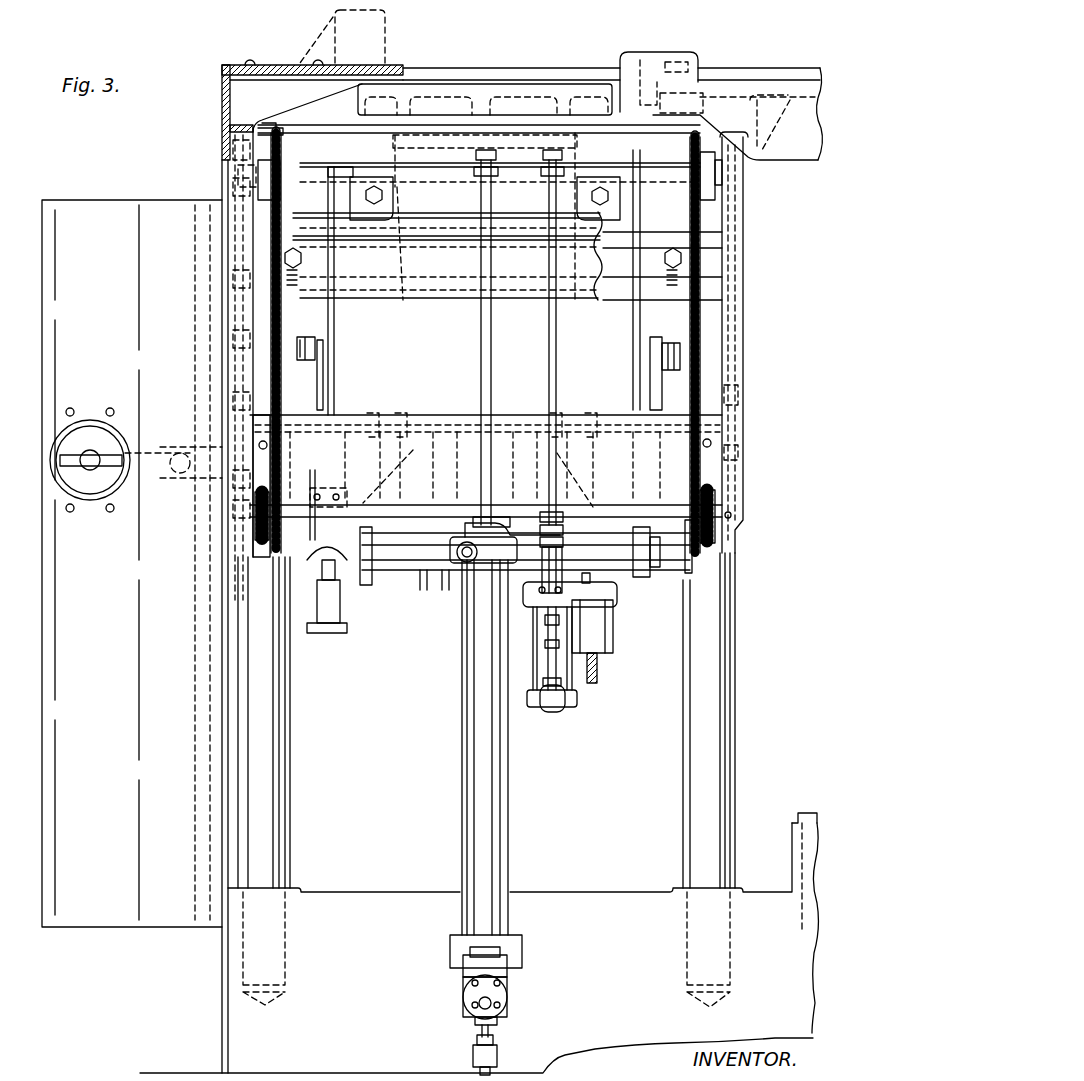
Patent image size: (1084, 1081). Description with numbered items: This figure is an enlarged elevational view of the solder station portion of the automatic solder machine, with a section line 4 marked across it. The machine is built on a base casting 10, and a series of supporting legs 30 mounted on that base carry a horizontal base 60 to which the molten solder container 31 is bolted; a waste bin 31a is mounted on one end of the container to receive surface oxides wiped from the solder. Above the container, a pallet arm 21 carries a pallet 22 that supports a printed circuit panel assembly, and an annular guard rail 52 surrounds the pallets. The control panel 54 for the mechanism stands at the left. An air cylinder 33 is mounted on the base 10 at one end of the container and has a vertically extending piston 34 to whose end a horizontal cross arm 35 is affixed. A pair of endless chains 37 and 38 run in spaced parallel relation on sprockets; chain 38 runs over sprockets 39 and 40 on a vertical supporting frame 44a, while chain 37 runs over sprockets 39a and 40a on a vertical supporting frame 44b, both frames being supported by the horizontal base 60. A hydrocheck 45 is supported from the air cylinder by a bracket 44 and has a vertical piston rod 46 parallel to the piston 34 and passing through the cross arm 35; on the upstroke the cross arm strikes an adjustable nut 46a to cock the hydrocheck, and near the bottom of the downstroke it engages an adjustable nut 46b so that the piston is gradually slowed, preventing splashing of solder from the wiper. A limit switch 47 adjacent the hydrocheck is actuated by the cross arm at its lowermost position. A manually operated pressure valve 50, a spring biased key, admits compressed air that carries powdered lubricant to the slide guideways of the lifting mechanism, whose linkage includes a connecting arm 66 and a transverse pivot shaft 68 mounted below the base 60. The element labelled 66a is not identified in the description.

The section line 4- 4 is at (314, 19).
The base casting 10 is at (597, 902).
The pallet arm 21 is at (740, 68).
The pallet 22 is at (393, 78).
The supporting legs 30 is at (285, 773).
The molten solder container 31 is at (625, 350).
The waste bin 31a is at (535, 212).
The air cylinder 33 is at (470, 749).
The piston 34 is at (481, 357).
The cross arm 35 is at (347, 170).
The endless chain 37 is at (700, 370).
The endless chain 38 is at (283, 189).
The sprocket 39 is at (258, 535).
The sprocket 39a is at (718, 532).
The sprocket 40 is at (262, 187).
The sprocket 40a is at (712, 181).
The bracket 44 is at (460, 537).
The vertical supporting frame 44a is at (230, 281).
The vertical supporting frame 44b is at (745, 248).
The hydrocheck 45 is at (580, 696).
The piston rod 46 is at (556, 369).
The adjustable nut 46a is at (560, 162).
The adjustable nut 46b is at (553, 520).
The limit switch 47 is at (595, 580).
The manually operated pressure valve 50 is at (332, 622).
The annular guard rail 52 is at (260, 62).
The control panel 54 is at (85, 210).
The horizontal base 60 is at (655, 470).
The connecting arm 66 is at (317, 392).
The bracket 66a is at (652, 393).
The transverse pivot shaft 68 is at (418, 560).